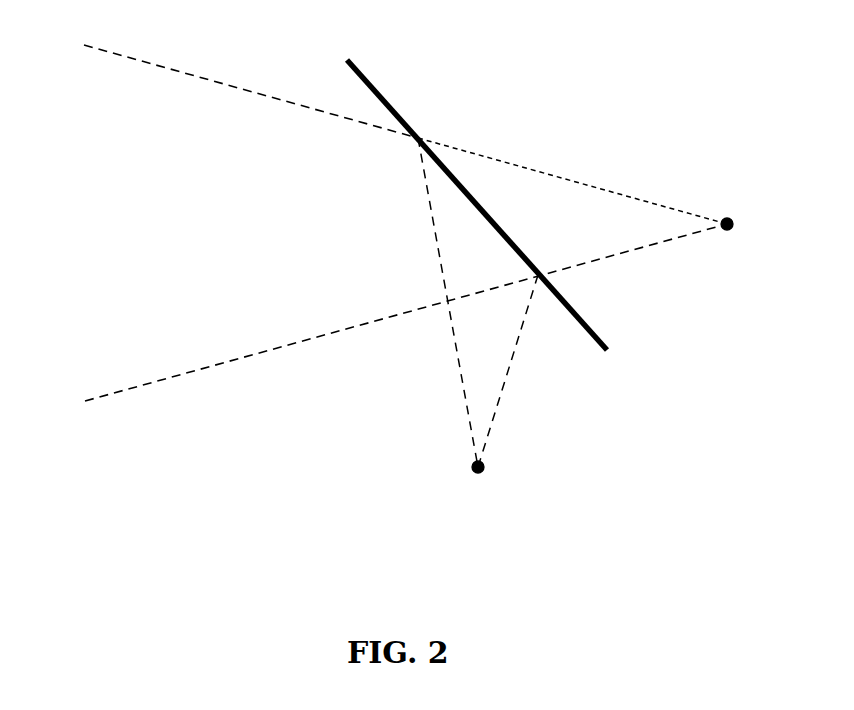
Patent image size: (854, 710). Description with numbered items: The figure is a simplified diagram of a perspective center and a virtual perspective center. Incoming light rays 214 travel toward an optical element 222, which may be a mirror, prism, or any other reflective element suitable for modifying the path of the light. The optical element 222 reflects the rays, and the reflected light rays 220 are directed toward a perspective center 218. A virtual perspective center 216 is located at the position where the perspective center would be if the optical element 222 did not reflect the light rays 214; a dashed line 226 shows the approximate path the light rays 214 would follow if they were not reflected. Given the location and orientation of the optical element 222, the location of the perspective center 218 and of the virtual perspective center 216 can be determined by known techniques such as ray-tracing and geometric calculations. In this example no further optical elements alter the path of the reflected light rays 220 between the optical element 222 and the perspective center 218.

The light rays 214 is at (138, 59).
The virtual perspective center 216 is at (733, 218).
The perspective center 218 is at (470, 463).
The reflected light rays 220 is at (431, 214).
The optical element 222 is at (367, 73).
The dashed line 226 is at (553, 175).